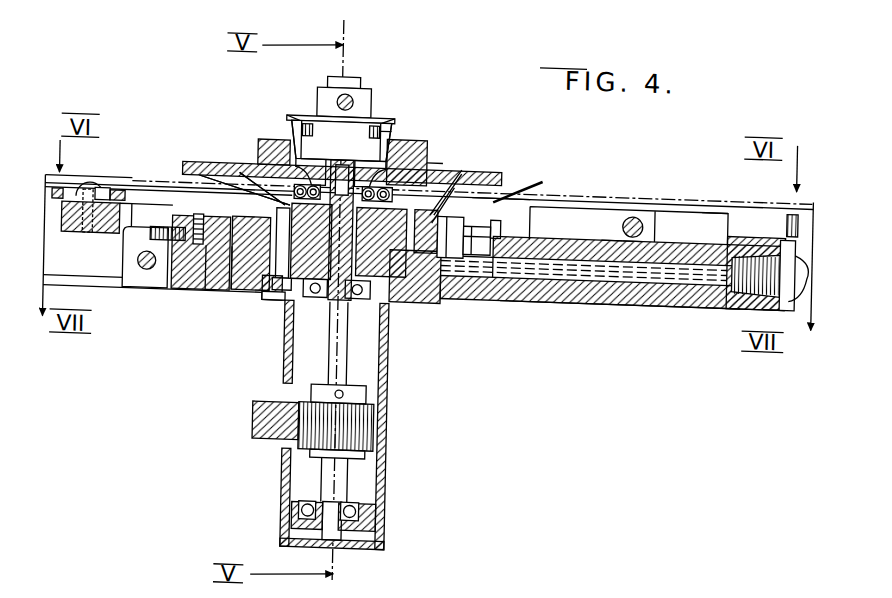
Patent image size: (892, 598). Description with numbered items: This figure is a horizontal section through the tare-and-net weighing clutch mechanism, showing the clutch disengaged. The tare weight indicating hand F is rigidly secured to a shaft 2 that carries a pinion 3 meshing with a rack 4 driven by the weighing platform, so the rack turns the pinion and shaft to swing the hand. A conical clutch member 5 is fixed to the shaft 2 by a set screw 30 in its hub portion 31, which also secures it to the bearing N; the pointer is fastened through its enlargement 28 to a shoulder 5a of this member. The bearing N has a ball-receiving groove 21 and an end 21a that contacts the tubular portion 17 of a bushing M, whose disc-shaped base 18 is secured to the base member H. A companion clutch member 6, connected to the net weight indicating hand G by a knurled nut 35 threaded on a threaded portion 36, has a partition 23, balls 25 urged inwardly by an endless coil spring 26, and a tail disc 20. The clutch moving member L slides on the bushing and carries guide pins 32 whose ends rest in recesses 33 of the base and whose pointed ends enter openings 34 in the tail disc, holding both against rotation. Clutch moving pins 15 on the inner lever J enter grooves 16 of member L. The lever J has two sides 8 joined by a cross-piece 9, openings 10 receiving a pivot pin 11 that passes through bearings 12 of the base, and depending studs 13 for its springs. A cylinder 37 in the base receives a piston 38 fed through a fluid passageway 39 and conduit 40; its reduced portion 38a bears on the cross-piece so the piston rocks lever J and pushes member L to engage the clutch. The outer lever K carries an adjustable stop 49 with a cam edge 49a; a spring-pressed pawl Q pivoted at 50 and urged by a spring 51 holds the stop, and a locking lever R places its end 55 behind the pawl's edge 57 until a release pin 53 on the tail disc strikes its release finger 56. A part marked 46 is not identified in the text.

The shaft 2 is at (326, 80).
The pinion 3 is at (360, 426).
The rack 4 is at (268, 424).
The clutch member 5 is at (393, 123).
The shoulder 5a is at (313, 100).
The clutch member 6 is at (396, 138).
The sides 8 is at (706, 200).
The cross-piece 9 is at (493, 199).
The openings 10 is at (628, 210).
The pivot pin 11 is at (641, 206).
The bearings 12 is at (610, 231).
The depending studs 13 is at (784, 200).
The clutch moving pins 15 is at (332, 306).
The grooves 16 is at (250, 291).
The tubular portion 17 is at (348, 260).
The disc-shaped base 18 is at (279, 303).
The tail disc 20 is at (450, 180).
The ball-receiving groove 21 is at (400, 157).
The end of bearing N 21a is at (362, 168).
The partition 23 is at (305, 170).
The ball 25 is at (321, 185).
The endless coil spring 26 is at (318, 188).
The enlargement 28 is at (296, 119).
The set screw 30 is at (349, 110).
The hub portion 31 is at (323, 88).
The guide pins 32 is at (275, 262).
The recesses 33 is at (284, 306).
The openings 34 is at (161, 200).
The knurled nut 35 is at (423, 155).
The threaded portion 36 is at (286, 164).
The cylinder 37 is at (499, 216).
The piston 38 is at (459, 249).
The reduced portion 38a is at (535, 187).
The fluid passageway 39 is at (643, 262).
The conduit 40 is at (799, 284).
The bracket 46 is at (154, 207).
The adjustable stop member 49 is at (64, 190).
The cam edge 49a is at (124, 207).
The pivot 50 is at (143, 280).
The spring 51 is at (182, 280).
The release pin 53 is at (209, 311).
The end of locking lever 55 is at (149, 210).
The release finger 56 is at (224, 280).
The edge 57 is at (156, 234).
The tare weight indicating hand F is at (394, 109).
The net weight indicating hand G is at (484, 165).
The base member H is at (683, 283).
The inner actuating lever J is at (681, 215).
The outer actuating lever K is at (106, 245).
The clutch moving member L is at (405, 272).
The bushing M is at (342, 180).
The bearing N is at (361, 80).
The spring-pressed pawl Q is at (157, 290).
The spring-pressed locking lever R is at (226, 214).